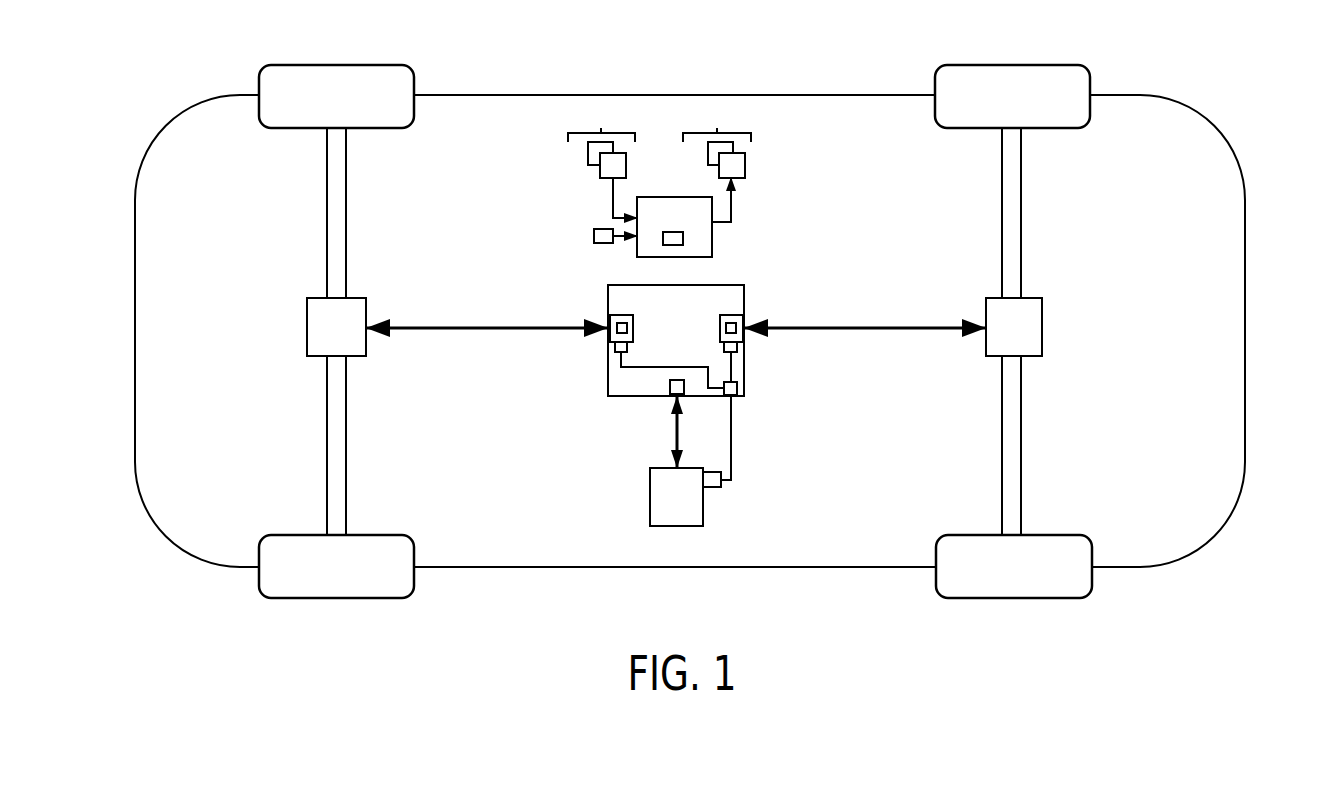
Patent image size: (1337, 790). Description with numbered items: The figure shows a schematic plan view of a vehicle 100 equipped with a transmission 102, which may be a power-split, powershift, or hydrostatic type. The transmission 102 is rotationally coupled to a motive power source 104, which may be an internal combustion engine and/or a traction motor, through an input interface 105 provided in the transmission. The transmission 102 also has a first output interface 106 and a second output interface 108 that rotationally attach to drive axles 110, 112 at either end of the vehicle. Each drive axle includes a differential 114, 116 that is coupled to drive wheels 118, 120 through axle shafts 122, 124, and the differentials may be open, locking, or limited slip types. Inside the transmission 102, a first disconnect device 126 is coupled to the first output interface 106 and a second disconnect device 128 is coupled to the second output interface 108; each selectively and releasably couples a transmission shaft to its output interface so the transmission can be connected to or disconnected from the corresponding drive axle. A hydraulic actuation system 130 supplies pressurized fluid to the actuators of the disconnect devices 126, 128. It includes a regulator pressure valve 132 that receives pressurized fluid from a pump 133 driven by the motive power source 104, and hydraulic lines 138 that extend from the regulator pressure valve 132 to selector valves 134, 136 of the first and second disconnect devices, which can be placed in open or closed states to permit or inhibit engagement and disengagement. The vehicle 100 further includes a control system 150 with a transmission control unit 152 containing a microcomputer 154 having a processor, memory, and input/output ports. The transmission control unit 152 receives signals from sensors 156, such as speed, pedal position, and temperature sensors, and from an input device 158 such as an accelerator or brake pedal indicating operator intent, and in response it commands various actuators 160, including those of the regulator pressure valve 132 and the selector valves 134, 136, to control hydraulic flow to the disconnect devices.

The vehicle 100 is at (1270, 102).
The transmission 102 is at (684, 340).
The motive power source 104 is at (677, 526).
The input interface 105 is at (670, 387).
The first output interface 106 is at (630, 316).
The second output interface 108 is at (720, 316).
The first drive axle 110 is at (301, 297).
The second drive axle 112 is at (1047, 301).
The first differential 114 is at (307, 329).
The second differential 116 is at (1042, 327).
The first drive wheels 118 is at (336, 331).
The second drive wheels 120 is at (1013, 331).
The first axle shafts 122 is at (327, 217).
The second axle shafts 124 is at (1002, 210).
The first disconnect device 126 is at (633, 328).
The second disconnect device 128 is at (720, 325).
The hydraulic actuation system 130 is at (650, 481).
The regulator pressure valve 132 is at (737, 388).
The pump 133 is at (711, 487).
The first selector valve 134 is at (615, 348).
The second selector valve 136 is at (737, 347).
The hydraulic lines 138 is at (657, 367).
The control system 150 is at (668, 178).
The transmission control unit 152 is at (674, 227).
The microcomputer 154 is at (683, 238).
The sensors 156 is at (602, 160).
The input device 158 is at (594, 236).
The actuators 160 is at (717, 162).